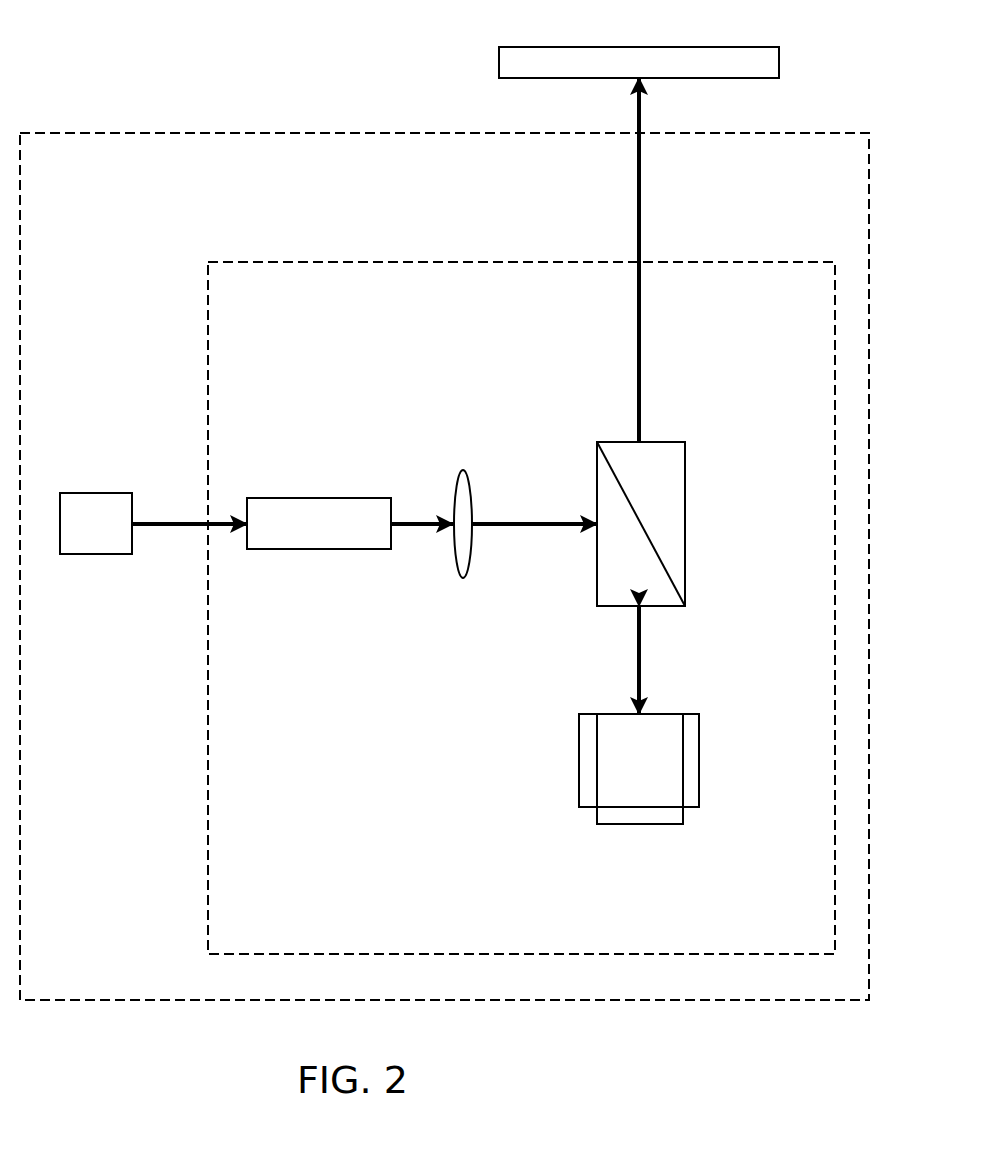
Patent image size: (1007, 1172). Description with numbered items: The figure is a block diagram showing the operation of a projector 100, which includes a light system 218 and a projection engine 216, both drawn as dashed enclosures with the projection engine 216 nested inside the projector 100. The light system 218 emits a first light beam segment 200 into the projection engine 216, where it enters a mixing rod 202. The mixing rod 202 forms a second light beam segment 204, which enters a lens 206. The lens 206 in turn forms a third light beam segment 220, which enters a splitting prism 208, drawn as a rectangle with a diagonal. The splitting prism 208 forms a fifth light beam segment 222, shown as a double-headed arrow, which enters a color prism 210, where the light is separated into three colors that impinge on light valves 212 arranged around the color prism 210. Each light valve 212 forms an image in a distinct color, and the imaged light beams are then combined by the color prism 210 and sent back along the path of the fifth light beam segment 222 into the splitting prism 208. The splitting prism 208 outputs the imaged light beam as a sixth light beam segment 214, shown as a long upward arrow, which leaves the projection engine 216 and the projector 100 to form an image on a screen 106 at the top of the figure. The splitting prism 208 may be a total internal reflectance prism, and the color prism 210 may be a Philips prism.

The projector 100 is at (265, 132).
The screen 106 is at (780, 62).
The first light beam segment 200 is at (183, 520).
The mixing rod 202 is at (300, 498).
The second light beam segment 204 is at (432, 522).
The lens 206 is at (463, 470).
The splitting prism 208 is at (683, 469).
The color prism 210 is at (607, 713).
The light valves 212 is at (580, 760).
The sixth light beam segment 214 is at (642, 363).
The projection engine 216 is at (521, 262).
The light system 218 is at (95, 492).
The third light beam segment 220 is at (552, 522).
The fifth light beam segment 222 is at (642, 663).